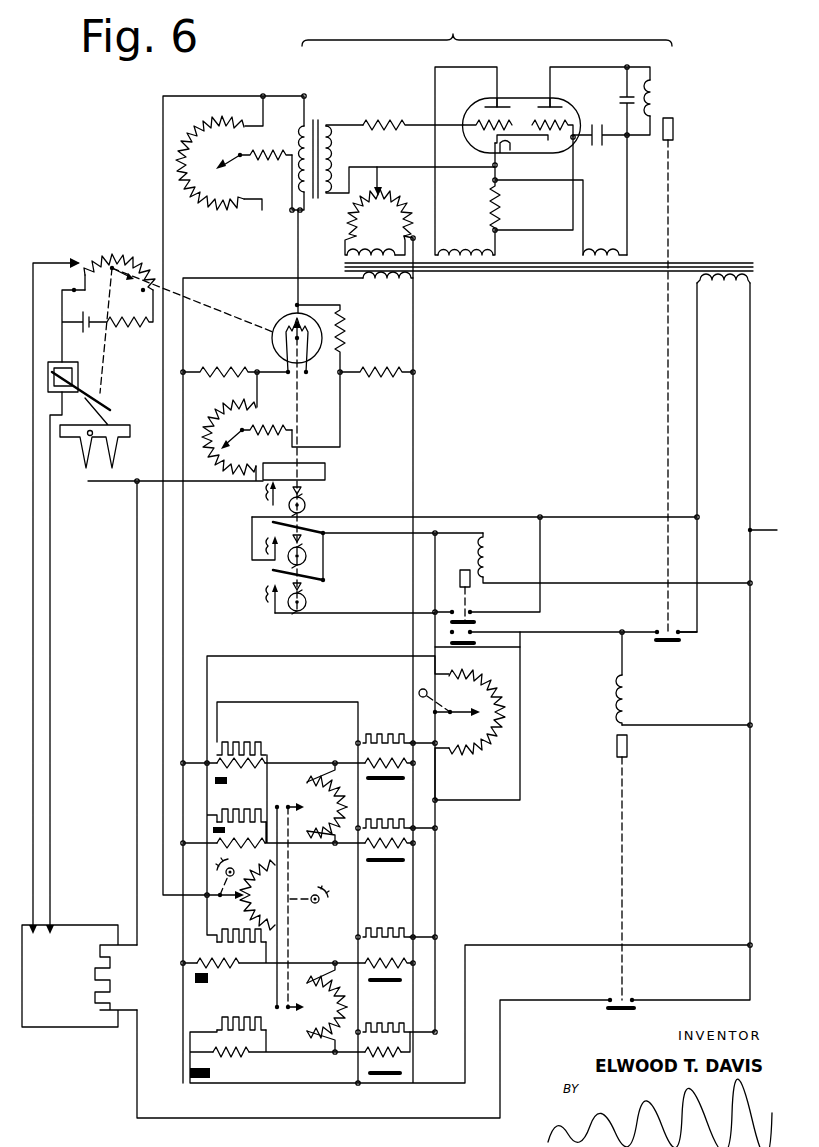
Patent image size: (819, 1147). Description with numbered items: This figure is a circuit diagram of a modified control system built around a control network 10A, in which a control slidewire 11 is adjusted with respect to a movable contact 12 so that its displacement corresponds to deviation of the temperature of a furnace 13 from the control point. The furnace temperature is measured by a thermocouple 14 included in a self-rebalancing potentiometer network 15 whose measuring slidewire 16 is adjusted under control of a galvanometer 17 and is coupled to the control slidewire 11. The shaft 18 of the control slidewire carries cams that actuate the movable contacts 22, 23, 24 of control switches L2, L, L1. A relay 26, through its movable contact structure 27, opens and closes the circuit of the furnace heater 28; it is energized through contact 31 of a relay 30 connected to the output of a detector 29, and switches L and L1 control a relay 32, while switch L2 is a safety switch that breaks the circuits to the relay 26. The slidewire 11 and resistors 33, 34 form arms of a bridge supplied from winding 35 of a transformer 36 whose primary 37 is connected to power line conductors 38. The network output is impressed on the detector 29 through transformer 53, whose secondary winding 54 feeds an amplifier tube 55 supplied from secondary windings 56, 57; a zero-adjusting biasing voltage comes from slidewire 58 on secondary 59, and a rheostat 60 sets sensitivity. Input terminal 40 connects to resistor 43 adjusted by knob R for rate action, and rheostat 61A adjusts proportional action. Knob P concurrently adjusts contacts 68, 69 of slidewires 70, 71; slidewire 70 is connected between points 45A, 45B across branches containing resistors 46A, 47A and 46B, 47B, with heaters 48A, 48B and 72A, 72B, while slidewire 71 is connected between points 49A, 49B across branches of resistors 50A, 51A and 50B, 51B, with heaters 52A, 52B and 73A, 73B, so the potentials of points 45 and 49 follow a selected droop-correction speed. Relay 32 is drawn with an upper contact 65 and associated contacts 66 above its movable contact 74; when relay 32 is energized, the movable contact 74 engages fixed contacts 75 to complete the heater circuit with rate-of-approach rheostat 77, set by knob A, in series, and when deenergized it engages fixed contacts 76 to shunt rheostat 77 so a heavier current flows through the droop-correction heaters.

The control network 10A is at (245, 627).
The control slidewire 11 is at (275, 340).
The movable contact 12 is at (296, 305).
The furnace 13 is at (70, 925).
The thermocouple 14 is at (52, 930).
The self-rebalancing potentiometer network 15 is at (62, 251).
The measuring slidewire 16 is at (147, 258).
The galvanometer 17 is at (145, 395).
The shaft 18 is at (238, 320).
The movable contact 22 is at (322, 482).
The movable contact 23 is at (323, 527).
The movable contact 24 is at (323, 577).
The relay 26 is at (627, 712).
The movable contact structure 27 is at (622, 1010).
The furnace heater 28 is at (95, 988).
The detector 29 is at (487, 28).
The relay 30 is at (655, 105).
The contact 31 is at (668, 642).
The relay 32 is at (490, 552).
The resistor 33 is at (236, 370).
The resistor 34 is at (396, 370).
The winding 35 is at (388, 282).
The transformer 36 is at (537, 299).
The primary 37 is at (724, 281).
The power line conductors 38 is at (120, 483).
The input terminal 40 is at (303, 95).
The resistor 43 is at (255, 897).
The point 45 is at (280, 806).
The point 45A is at (335, 762).
The point 45B is at (335, 844).
The resistor 46A is at (258, 763).
The resistor 46B is at (222, 845).
The resistor 47A is at (402, 765).
The resistor 47B is at (402, 845).
The heater 48A is at (368, 740).
The heater 48B is at (368, 825).
The point 49 is at (280, 1010).
The point 49A is at (335, 962).
The point 49B is at (335, 1054).
The resistor 50A is at (200, 963).
The resistor 50B is at (215, 1052).
The resistor 51A is at (400, 963).
The resistor 51B is at (396, 1052).
The heater 52A is at (370, 933).
The heater 52B is at (370, 1027).
The transformer 53 is at (312, 118).
The secondary winding 54 is at (332, 152).
The amplifier tube 55 is at (506, 98).
The secondary winding 56 is at (446, 252).
The secondary winding 57 is at (590, 250).
The slidewire 58 is at (352, 224).
The secondary 59 is at (387, 250).
The rheostat 60 is at (240, 197).
The rheostat 61A is at (252, 430).
The contact 65 is at (476, 622).
The contact 66 is at (472, 610).
The contact 68 is at (312, 822).
The contact 69 is at (312, 1022).
The voltage-divider slidewire 70 is at (320, 795).
The voltage-divider slidewire 71 is at (320, 997).
The heater 72A is at (228, 748).
The heater 72B is at (224, 818).
The heater 73A is at (216, 933).
The heater 73B is at (216, 1020).
The movable contact 74 is at (476, 645).
The fixed contacts 75 is at (500, 632).
The fixed contacts 76 is at (472, 647).
The rate of approach rheostat 77 is at (484, 733).
The knob A is at (434, 699).
The control switch L is at (262, 534).
The control switch L1 is at (262, 582).
The safety switch L2 is at (262, 494).
The knob P is at (309, 909).
The knob R is at (235, 876).